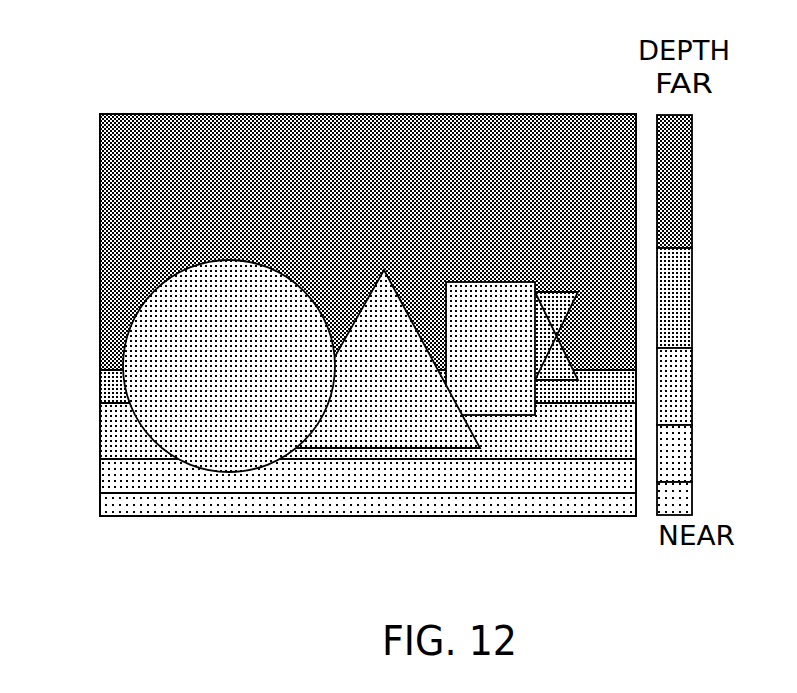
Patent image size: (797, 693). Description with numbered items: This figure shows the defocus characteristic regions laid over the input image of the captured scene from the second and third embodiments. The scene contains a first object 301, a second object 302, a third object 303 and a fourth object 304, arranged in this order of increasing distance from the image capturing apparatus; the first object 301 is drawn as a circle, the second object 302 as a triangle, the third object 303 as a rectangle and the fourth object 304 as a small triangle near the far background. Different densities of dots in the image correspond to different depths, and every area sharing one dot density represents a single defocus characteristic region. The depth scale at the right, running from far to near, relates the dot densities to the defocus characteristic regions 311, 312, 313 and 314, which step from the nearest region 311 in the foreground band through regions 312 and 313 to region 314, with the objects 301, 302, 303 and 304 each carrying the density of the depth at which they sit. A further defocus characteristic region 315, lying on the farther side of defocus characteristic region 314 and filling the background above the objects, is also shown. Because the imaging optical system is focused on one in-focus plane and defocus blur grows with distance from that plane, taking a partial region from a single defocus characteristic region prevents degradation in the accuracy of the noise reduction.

The first object 301 is at (134, 316).
The second object 302 is at (345, 448).
The third object 303 is at (498, 415).
The fourth object 304 is at (563, 292).
The defocus characteristic region 311 is at (708, 512).
The defocus characteristic region 312 is at (708, 479).
The defocus characteristic region 313 is at (708, 351).
The defocus characteristic region 314 is at (708, 251).
The defocus characteristic region 315 is at (708, 118).